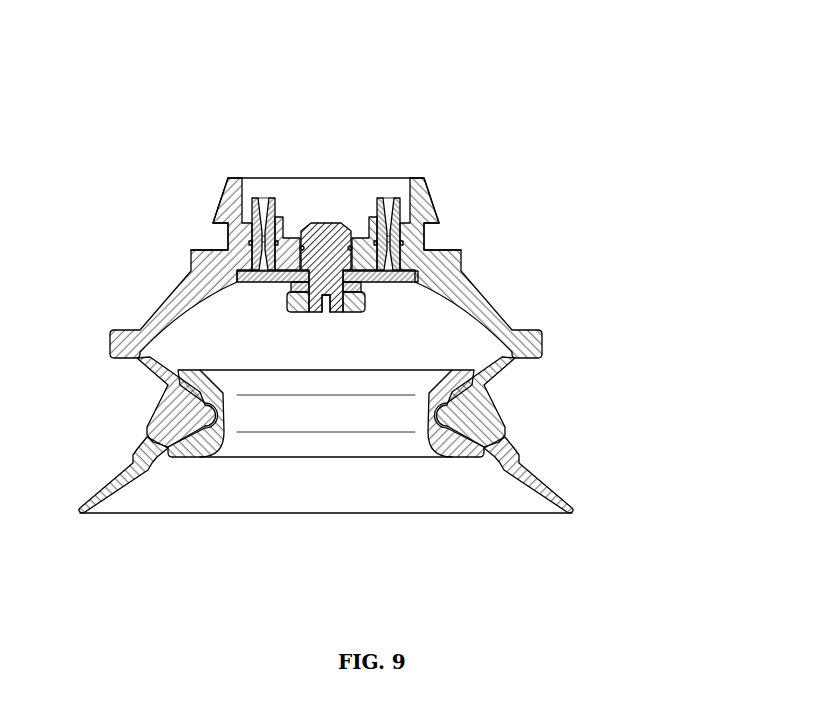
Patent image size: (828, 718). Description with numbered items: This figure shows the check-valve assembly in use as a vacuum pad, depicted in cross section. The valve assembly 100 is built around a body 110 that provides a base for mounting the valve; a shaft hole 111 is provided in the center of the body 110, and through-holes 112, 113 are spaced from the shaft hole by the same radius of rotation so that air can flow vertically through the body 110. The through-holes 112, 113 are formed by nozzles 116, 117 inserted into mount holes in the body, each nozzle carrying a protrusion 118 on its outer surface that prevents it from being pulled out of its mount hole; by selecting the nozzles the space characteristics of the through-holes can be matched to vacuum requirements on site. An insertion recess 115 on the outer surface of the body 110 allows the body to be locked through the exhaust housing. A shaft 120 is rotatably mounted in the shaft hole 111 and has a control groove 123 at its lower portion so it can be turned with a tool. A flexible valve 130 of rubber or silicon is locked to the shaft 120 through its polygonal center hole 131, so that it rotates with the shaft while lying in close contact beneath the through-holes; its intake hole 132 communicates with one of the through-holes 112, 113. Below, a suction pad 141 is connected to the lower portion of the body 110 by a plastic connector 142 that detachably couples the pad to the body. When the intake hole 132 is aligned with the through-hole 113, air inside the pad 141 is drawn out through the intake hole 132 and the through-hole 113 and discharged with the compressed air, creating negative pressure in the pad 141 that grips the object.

The valve assembly 100 is at (432, 102).
The body 110 is at (548, 327).
The shaft hole 111 is at (311, 226).
The through-hole 112 is at (263, 208).
The through-hole 113 is at (386, 212).
The insertion recess 115 is at (438, 236).
The nozzle 116 is at (403, 222).
The nozzle 117 is at (250, 228).
The protrusion 118 is at (250, 247).
The shaft 120 is at (277, 310).
The control groove 123 is at (320, 316).
The valve 130 is at (372, 288).
The center hole 131 is at (305, 292).
The intake hole 132 is at (400, 285).
The suction pad 141 is at (137, 478).
The connector 142 is at (215, 460).